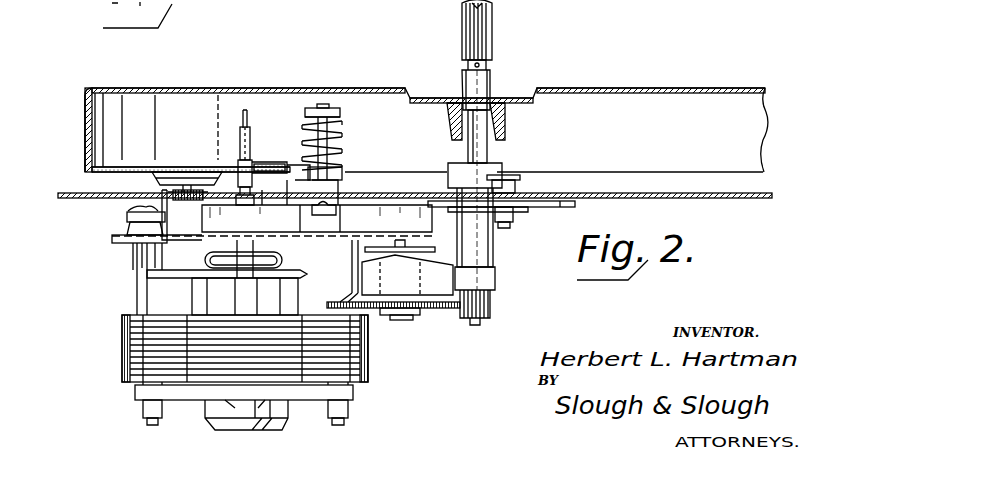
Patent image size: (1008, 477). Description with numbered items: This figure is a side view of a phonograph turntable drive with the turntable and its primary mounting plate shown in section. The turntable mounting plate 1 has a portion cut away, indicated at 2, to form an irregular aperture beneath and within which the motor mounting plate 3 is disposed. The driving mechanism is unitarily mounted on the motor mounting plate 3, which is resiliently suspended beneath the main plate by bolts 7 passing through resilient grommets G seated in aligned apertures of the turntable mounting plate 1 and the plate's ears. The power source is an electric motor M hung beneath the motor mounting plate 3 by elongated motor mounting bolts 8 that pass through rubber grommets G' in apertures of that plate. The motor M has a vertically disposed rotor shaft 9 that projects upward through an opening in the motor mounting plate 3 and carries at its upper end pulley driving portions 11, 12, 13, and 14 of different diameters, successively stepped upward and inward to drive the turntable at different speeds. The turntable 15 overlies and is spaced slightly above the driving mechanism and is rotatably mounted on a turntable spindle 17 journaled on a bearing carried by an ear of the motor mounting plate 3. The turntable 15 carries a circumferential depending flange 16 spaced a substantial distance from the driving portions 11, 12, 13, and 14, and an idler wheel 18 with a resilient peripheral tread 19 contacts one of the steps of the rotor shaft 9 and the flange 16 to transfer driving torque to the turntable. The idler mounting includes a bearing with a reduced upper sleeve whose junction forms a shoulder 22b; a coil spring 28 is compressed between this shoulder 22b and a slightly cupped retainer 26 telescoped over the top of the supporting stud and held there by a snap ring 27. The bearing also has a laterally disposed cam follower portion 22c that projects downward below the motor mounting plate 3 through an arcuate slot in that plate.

The turntable mounting plate 1 is at (718, 200).
The cut-away portion 2 is at (400, 195).
The motor mounting plate 3 is at (527, 205).
The bolt 7 is at (507, 178).
The motor mounting bolt 8 is at (130, 213).
The rotor shaft 9 is at (258, 247).
The pulley driving portion 11 is at (250, 162).
The pulley driving portion 12 is at (253, 150).
The pulley driving portion 13 is at (241, 134).
The pulley driving portion 14 is at (243, 116).
The turntable 15 is at (302, 88).
The circumferential depending flange 16 is at (85, 134).
The turntable spindle 17 is at (478, 128).
The idler wheel 18 is at (166, 160).
The resilient peripheral tread 19 is at (138, 160).
The shoulder 22b is at (345, 178).
The cam follower portion 22c is at (340, 258).
The retainer 26 is at (340, 118).
The snap ring 27 is at (337, 110).
The coil spring 28 is at (340, 142).
The resilient grommet G is at (524, 189).
The rubber grommet G' is at (121, 241).
The electric motor M is at (133, 290).